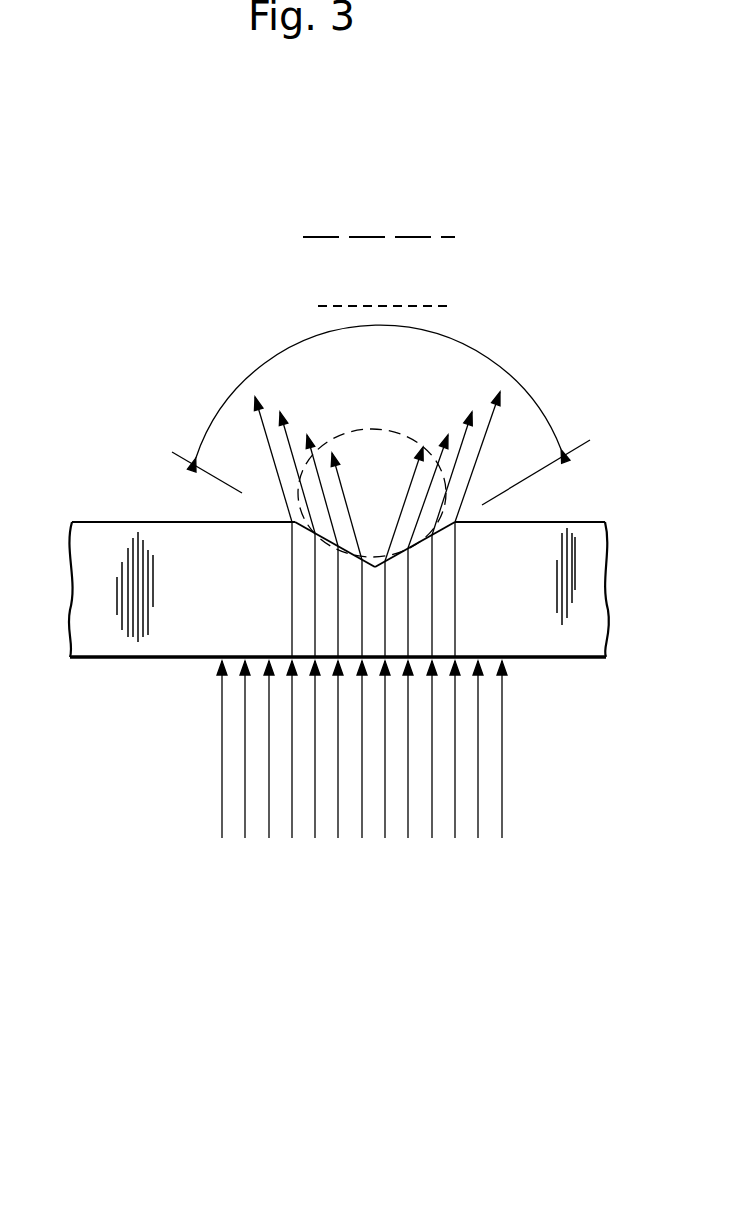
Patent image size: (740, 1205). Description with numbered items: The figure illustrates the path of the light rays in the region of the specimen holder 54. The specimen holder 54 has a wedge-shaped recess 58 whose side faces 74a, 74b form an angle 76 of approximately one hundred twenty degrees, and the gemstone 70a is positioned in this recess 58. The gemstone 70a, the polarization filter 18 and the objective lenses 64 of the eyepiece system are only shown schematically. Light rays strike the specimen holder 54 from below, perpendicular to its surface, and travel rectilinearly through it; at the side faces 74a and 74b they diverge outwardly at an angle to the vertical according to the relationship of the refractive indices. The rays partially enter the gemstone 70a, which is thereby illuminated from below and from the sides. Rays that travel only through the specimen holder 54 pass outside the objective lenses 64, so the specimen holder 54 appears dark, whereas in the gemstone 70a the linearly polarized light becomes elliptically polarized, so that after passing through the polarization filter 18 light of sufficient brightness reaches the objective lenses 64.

The polarization filter 18 is at (316, 307).
The specimen holder 54 is at (557, 630).
The wedge-shaped recess 58 is at (362, 487).
The objective lenses 64 is at (415, 248).
The gemstone 70a is at (400, 429).
The side face 74a is at (335, 541).
The side face 74b is at (410, 545).
The angle 76 is at (542, 410).